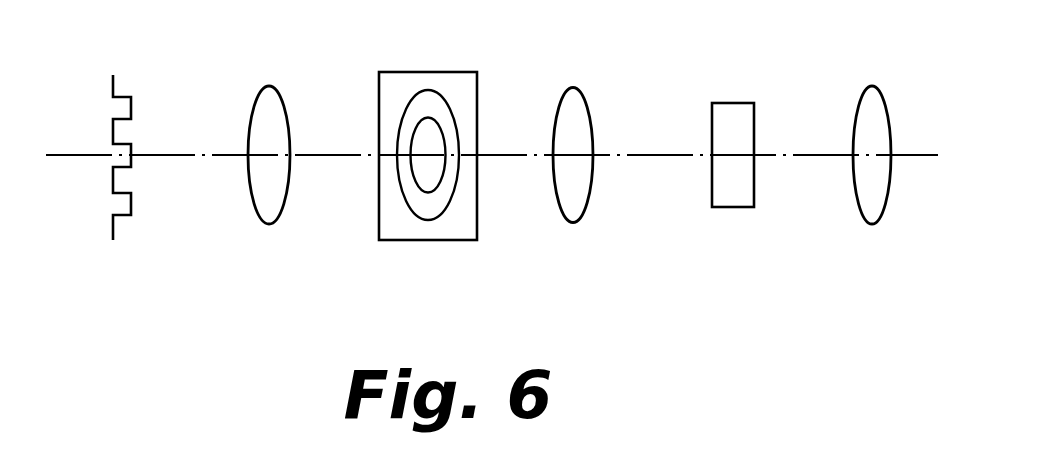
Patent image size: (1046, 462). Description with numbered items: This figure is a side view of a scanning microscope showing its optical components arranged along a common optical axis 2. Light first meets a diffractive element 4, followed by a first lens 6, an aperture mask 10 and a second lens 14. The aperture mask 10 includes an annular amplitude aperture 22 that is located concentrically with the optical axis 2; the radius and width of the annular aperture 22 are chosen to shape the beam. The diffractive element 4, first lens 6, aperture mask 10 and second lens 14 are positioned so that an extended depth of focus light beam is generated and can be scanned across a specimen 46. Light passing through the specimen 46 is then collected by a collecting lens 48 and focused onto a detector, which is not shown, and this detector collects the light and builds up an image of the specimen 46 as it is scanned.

The optical axis 2 is at (655, 155).
The diffractive element 4 is at (115, 83).
The first lens 6 is at (282, 100).
The aperture mask 10 is at (477, 85).
The annular amplitude aperture 22 is at (442, 192).
The second lens 14 is at (587, 97).
The specimen 46 is at (733, 112).
The collecting lens 48 is at (883, 97).